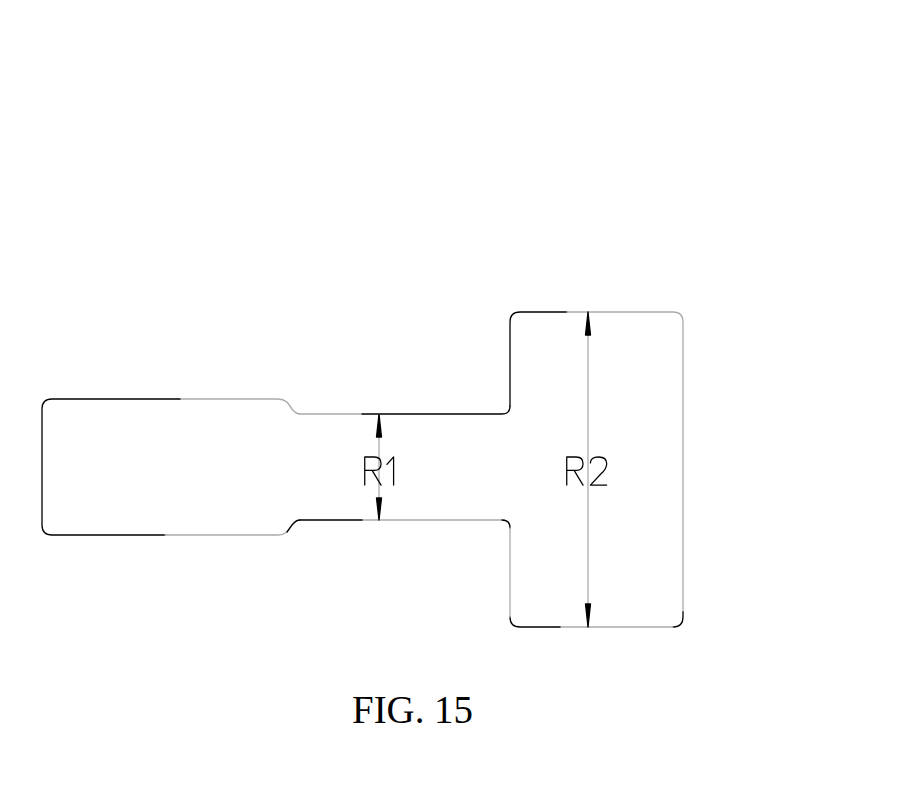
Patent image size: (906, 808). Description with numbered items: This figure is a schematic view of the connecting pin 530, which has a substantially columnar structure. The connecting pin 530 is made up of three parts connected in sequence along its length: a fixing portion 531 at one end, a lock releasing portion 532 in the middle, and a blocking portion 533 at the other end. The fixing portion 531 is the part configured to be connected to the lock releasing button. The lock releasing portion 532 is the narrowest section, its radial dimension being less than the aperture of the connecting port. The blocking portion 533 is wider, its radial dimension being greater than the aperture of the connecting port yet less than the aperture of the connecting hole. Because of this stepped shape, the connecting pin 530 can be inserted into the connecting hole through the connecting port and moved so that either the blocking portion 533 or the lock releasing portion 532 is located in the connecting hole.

The connecting pin 530 is at (285, 130).
The fixing portion 531 is at (340, 179).
The lock releasing portion 532 is at (582, 185).
The blocking portion 533 is at (780, 193).